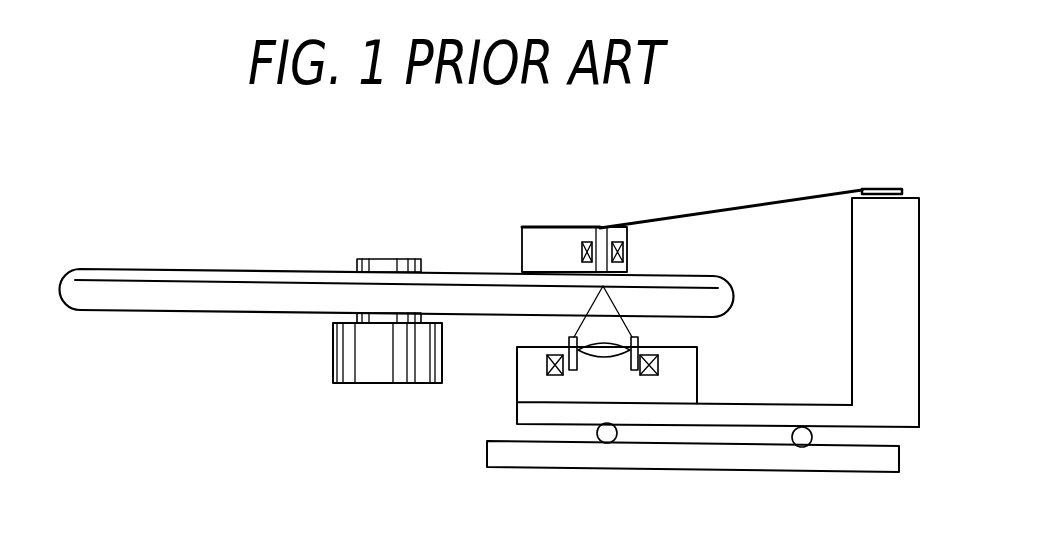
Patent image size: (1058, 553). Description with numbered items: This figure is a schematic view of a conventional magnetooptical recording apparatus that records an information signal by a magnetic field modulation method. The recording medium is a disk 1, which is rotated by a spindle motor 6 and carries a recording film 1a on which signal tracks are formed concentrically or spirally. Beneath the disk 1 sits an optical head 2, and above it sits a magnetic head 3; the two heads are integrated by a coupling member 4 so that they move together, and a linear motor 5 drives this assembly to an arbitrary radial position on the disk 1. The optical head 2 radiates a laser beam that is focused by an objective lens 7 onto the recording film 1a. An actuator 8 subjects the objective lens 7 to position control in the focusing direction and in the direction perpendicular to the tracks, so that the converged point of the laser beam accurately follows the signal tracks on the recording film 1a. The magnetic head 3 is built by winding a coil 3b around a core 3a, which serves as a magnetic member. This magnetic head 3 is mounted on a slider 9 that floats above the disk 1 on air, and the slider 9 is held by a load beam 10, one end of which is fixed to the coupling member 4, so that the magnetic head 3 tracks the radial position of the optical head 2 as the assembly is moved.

The disk 1 is at (172, 297).
The recording film 1a is at (219, 279).
The optical head 2 is at (522, 388).
The magnetic head 3 is at (583, 135).
The core 3a is at (602, 236).
The coil 3b is at (630, 243).
The coupling member 4 is at (862, 341).
The linear motor 5 is at (745, 460).
The spindle motor 6 is at (335, 364).
The objective lens 7 is at (606, 352).
The actuator 8 is at (547, 365).
The slider 9 is at (527, 257).
The load beam 10 is at (727, 208).